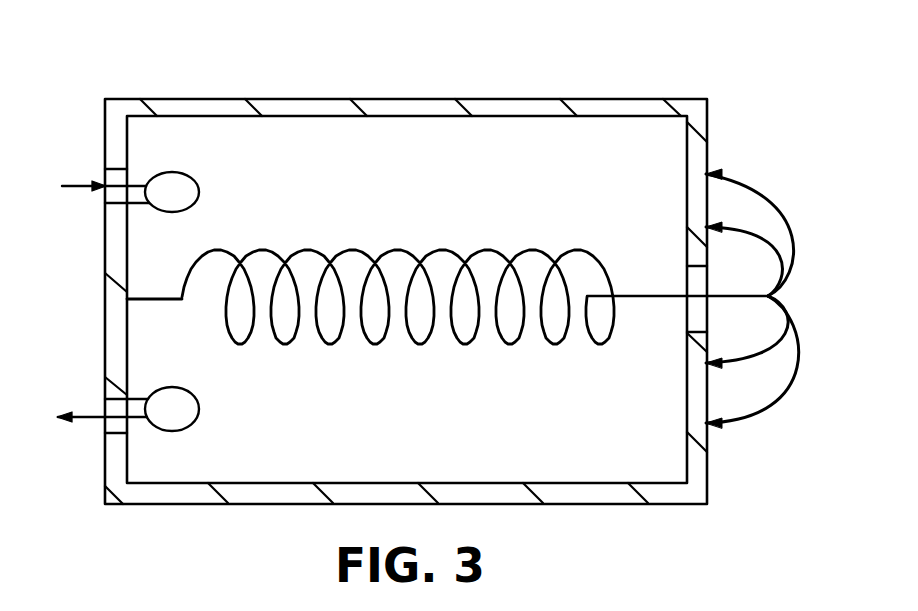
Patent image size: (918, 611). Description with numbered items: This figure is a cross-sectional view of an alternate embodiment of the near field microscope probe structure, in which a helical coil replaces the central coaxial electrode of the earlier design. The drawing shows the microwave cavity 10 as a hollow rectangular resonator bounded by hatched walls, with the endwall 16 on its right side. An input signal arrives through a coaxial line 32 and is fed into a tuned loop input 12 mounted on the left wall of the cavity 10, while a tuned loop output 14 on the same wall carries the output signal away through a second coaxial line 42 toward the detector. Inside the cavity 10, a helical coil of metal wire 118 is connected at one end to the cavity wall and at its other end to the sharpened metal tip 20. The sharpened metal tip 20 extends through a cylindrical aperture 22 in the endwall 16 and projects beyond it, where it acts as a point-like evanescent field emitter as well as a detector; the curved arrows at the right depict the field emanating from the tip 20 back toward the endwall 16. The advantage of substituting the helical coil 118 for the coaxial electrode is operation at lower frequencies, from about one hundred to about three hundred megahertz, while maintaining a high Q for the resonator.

The microwave cavity 10 is at (457, 275).
The tuned loop input 12 is at (200, 186).
The tuned loop output 14 is at (200, 409).
The endwall 16 is at (706, 150).
The sharpened metal tip 20 is at (742, 292).
The aperture 22 is at (694, 309).
The coaxial line 32 is at (97, 184).
The second coaxial line 42 is at (84, 416).
The helical coil 118 is at (457, 252).